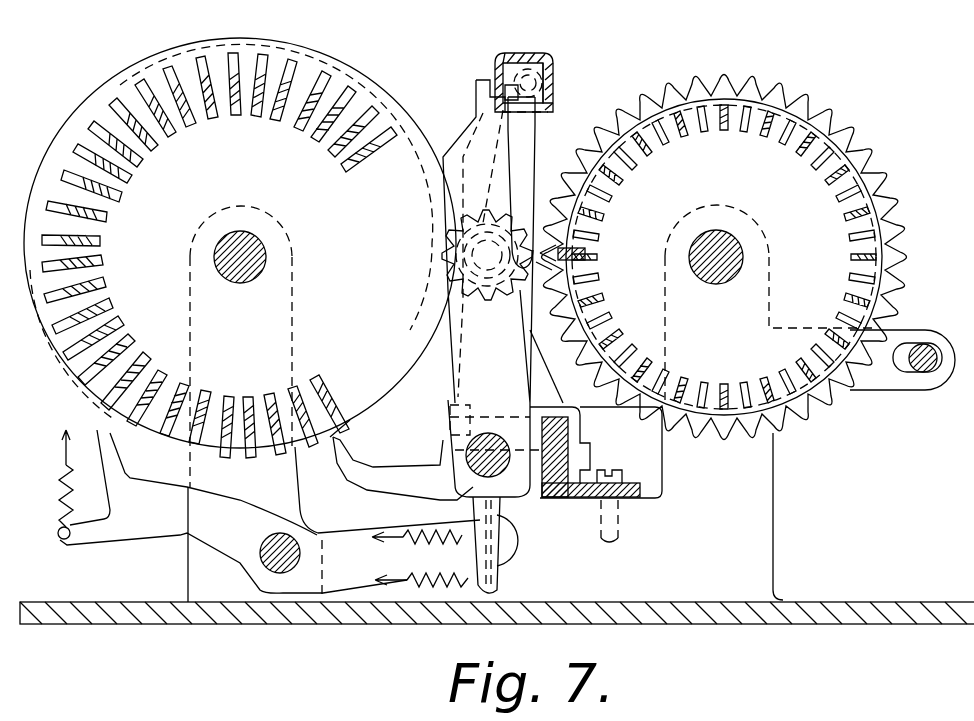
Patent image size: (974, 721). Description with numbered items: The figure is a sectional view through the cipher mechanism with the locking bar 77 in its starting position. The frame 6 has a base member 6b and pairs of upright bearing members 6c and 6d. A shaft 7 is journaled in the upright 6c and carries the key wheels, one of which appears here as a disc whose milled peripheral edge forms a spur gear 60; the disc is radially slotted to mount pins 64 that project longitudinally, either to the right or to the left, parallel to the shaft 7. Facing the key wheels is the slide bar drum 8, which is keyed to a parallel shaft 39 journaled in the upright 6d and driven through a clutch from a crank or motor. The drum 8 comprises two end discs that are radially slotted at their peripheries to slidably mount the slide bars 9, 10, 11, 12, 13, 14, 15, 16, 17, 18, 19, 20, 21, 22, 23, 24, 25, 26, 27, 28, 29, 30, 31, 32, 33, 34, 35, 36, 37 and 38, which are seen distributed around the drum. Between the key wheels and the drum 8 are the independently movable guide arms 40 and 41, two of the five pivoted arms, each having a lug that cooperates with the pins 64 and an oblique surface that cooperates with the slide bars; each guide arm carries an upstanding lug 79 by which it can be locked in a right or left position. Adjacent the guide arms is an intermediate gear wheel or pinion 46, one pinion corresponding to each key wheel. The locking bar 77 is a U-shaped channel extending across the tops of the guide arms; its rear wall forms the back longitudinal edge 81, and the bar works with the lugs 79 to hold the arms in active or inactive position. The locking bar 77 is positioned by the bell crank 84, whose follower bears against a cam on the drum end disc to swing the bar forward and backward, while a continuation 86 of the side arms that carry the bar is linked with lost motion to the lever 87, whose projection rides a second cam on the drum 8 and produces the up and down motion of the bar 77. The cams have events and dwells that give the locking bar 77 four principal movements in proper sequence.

The frame 6 is at (829, 602).
The base member 6b is at (130, 602).
The upright bearing member 6c is at (746, 212).
The upright bearing member 6d is at (276, 214).
The shaft 7 is at (733, 278).
The slide bar drum 8 is at (158, 38).
The slide bar 9 is at (347, 172).
The slide bar 10 is at (332, 157).
The slide bar 11 is at (314, 142).
The slide bar 12 is at (298, 131).
The slide bar 13 is at (274, 121).
The slide bar 14 is at (266, 60).
The slide bar 15 is at (235, 115).
The slide bar 16 is at (212, 119).
The slide bar 17 is at (190, 127).
The slide bar 18 is at (171, 137).
The slide bar 19 is at (113, 95).
The slide bar 20 is at (140, 165).
The slide bar 21 is at (130, 181).
The slide bar 22 is at (121, 199).
The slide bar 23 is at (107, 218).
The slide bar 24 is at (101, 241).
The slide bar 25 is at (103, 261).
The slide bar 26 is at (106, 283).
The slide bar 27 is at (112, 304).
The slide bar 28 is at (122, 322).
The slide bar 29 is at (133, 339).
The slide bar 30 is at (149, 356).
The slide bar 31 is at (165, 373).
The slide bar 32 is at (190, 385).
The slide bar 33 is at (191, 444).
The slide bar 34 is at (228, 396).
The slide bar 35 is at (249, 397).
The slide bar 36 is at (279, 457).
The slide bar 37 is at (291, 388).
The slide bar 38 is at (318, 375).
The shaft 39 is at (240, 283).
The guide arm 40 is at (503, 178).
The guide arm 41 is at (533, 152).
The intermediate gear wheel 46 is at (490, 311).
The spur gear 60 is at (838, 126).
The pin 64 is at (820, 176).
The locking bar 77 is at (526, 53).
The upstanding lug 79 is at (480, 80).
The back longitudinal edge 81 is at (554, 78).
The bell crank 84 is at (377, 488).
The continuation of side arms 86 is at (596, 474).
The lever 87 is at (147, 533).